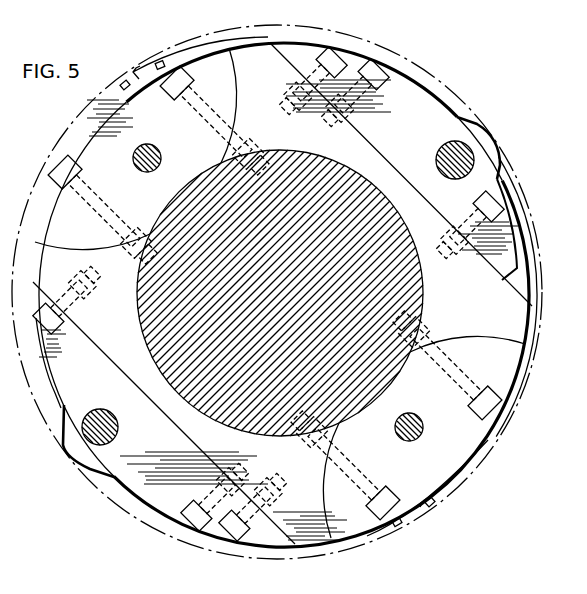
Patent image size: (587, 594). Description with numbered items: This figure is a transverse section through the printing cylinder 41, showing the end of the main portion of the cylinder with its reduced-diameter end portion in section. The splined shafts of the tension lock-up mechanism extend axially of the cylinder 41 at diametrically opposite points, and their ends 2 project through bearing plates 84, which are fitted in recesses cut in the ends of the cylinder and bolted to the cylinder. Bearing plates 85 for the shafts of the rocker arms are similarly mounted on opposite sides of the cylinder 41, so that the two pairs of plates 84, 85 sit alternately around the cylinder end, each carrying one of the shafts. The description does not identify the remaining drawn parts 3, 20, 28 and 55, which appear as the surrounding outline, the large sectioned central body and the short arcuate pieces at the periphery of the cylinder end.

The ends of the spline shafts 2 is at (410, 422).
The housing 3 is at (258, 54).
The lobe 20 is at (146, 172).
The shaft 28 is at (307, 297).
The cylinder 41 is at (358, 58).
The shell segment 55 is at (193, 58).
The bearing plates 84 is at (466, 206).
The bearing plates 85 is at (168, 141).